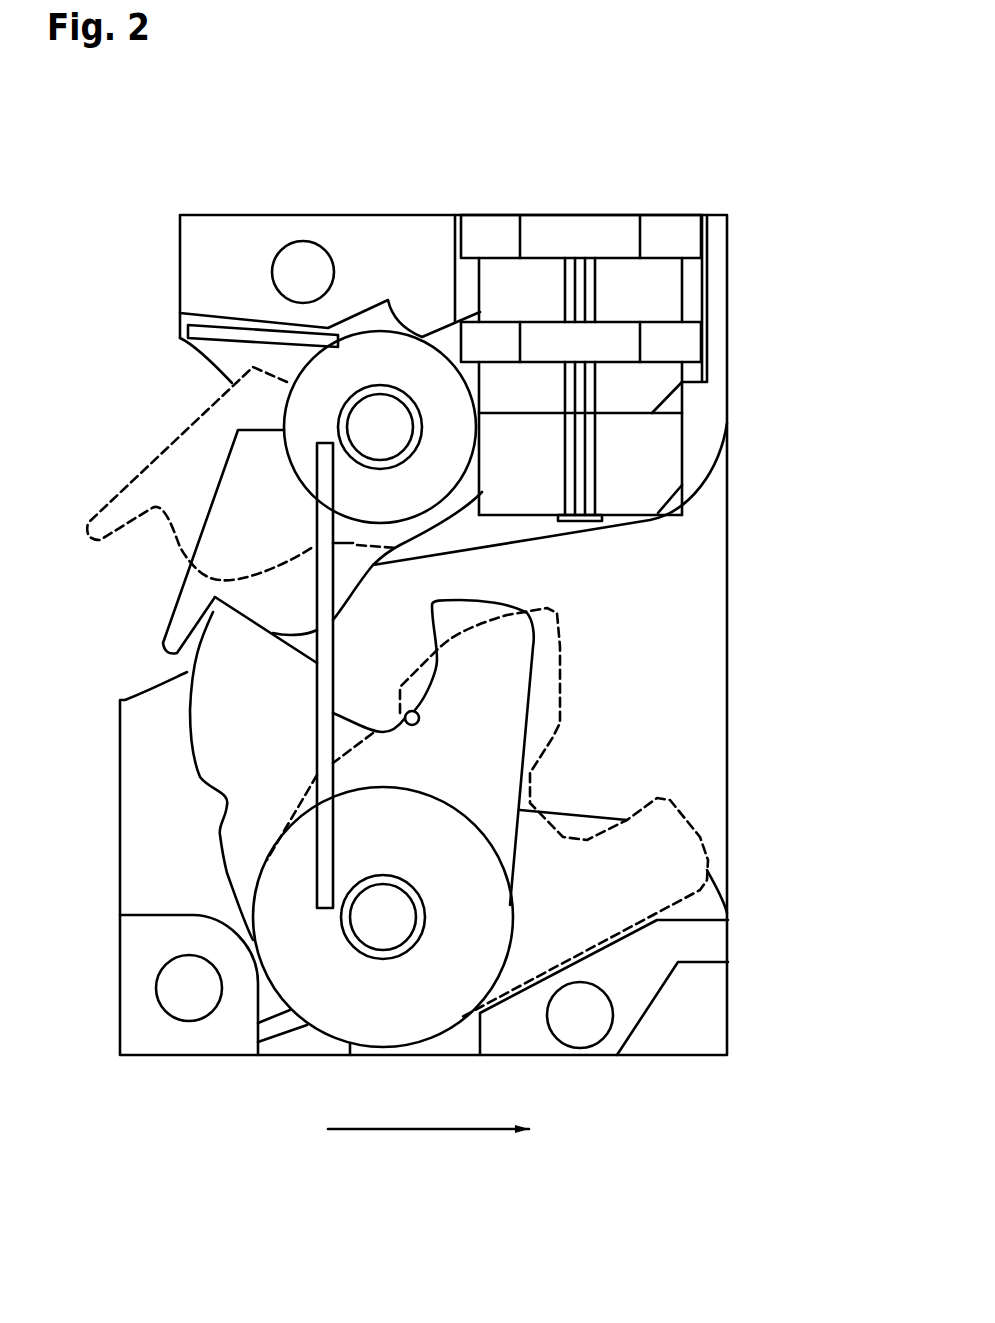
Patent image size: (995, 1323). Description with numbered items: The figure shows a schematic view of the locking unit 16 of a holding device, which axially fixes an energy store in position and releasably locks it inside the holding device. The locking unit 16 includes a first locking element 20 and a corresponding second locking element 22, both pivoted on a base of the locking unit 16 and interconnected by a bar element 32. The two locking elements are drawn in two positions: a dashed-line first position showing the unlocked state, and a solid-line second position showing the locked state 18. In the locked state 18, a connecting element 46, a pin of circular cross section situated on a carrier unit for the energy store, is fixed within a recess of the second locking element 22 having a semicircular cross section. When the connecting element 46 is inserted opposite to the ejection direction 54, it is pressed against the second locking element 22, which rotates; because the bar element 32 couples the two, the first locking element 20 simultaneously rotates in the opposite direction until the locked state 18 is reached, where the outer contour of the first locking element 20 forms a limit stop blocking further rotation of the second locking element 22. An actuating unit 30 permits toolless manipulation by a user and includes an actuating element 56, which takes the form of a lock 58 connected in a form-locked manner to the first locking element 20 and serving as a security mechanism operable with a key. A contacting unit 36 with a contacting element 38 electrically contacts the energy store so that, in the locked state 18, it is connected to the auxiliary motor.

The locking unit 16 is at (731, 150).
The locked state 18 is at (140, 654).
The first locking element 20 is at (263, 597).
The second locking element 22 is at (233, 687).
The actuating unit 30 is at (368, 360).
The bar element 32 is at (317, 522).
The contacting unit 36 is at (609, 494).
The contacting element 38 is at (587, 521).
The connecting element 46 is at (373, 685).
The ejection direction 54 is at (425, 1131).
The actuating element 56 is at (378, 427).
The lock 58 is at (378, 427).